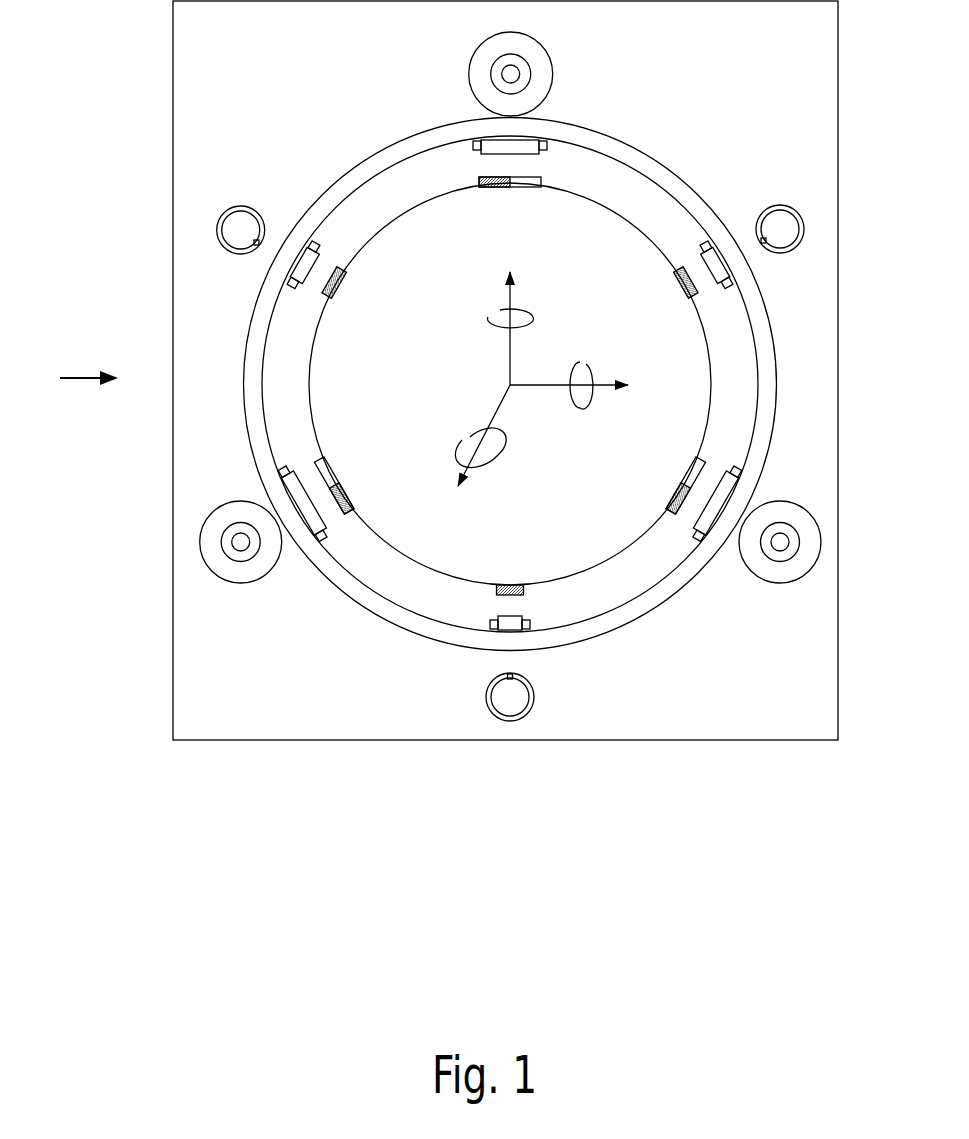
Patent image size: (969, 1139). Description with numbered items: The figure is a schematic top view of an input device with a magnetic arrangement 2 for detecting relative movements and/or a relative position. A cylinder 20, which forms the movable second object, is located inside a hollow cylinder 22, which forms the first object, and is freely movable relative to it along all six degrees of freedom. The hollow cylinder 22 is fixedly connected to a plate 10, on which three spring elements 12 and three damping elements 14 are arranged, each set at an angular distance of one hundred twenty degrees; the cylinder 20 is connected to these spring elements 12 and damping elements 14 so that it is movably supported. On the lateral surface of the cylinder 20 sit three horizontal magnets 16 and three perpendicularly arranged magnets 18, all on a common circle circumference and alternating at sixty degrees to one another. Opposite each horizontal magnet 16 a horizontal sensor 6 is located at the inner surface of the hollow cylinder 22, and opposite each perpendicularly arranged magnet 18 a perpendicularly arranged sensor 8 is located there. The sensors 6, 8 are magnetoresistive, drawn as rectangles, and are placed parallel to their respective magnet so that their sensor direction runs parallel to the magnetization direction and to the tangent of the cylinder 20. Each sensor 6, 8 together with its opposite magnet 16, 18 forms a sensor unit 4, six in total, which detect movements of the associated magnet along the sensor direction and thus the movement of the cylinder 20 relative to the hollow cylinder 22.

The magnetic arrangement 2 is at (84, 128).
The sensor unit 4 is at (340, 246).
The horizontal sensor 6 is at (487, 148).
The perpendicularly arranged sensor 8 is at (311, 268).
The plate 10 is at (244, 662).
The spring element 12 is at (241, 206).
The damping element 14 is at (460, 76).
The horizontal magnet 16 is at (556, 162).
The perpendicularly arranged magnet 18 is at (302, 296).
The cylinder 20 is at (372, 366).
The hollow cylinder 22 is at (244, 393).